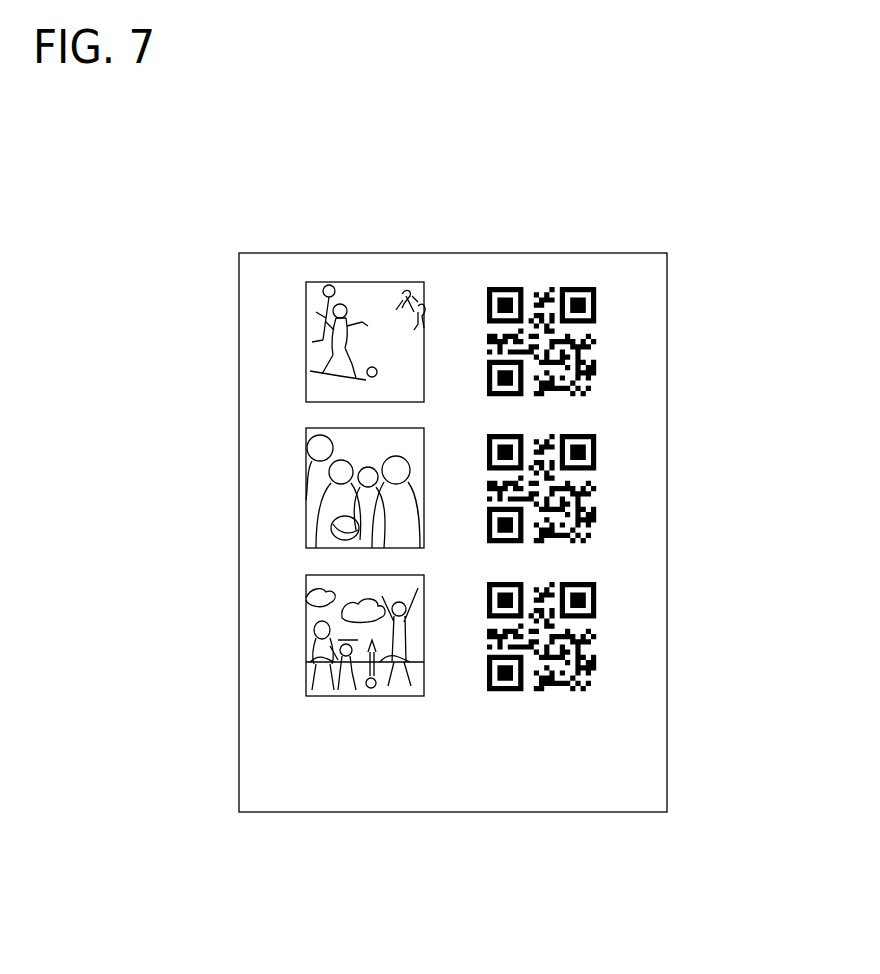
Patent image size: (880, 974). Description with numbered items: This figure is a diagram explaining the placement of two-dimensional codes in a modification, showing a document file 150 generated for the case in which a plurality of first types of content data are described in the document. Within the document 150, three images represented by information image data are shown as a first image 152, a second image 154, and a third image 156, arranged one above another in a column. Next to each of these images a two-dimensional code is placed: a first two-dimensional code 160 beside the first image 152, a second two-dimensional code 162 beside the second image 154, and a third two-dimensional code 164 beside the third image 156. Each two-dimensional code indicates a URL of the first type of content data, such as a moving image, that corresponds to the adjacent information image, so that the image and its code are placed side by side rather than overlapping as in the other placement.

The print sheet / output page 150 is at (602, 211).
The first image 152 is at (306, 343).
The second image 154 is at (306, 490).
The third image 156 is at (306, 637).
The first two-dimensional code 160 is at (596, 343).
The second two-dimensional code 162 is at (596, 490).
The third two-dimensional code 164 is at (596, 637).